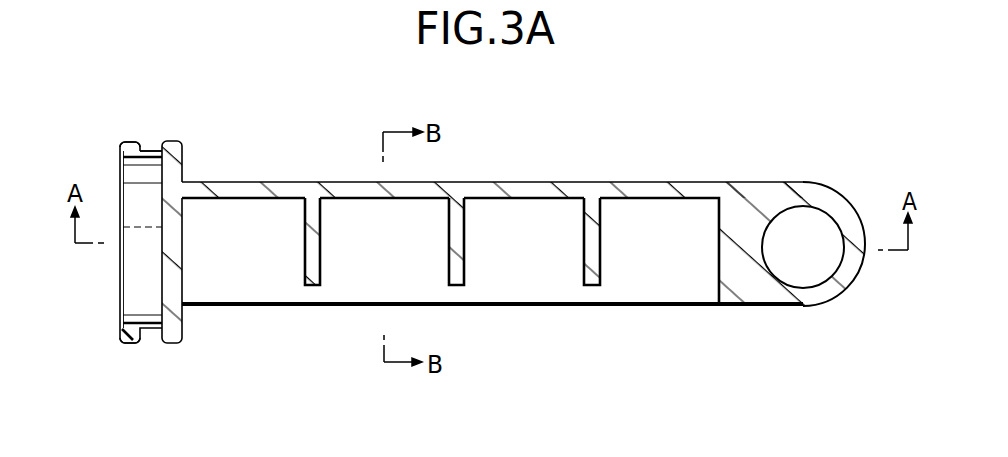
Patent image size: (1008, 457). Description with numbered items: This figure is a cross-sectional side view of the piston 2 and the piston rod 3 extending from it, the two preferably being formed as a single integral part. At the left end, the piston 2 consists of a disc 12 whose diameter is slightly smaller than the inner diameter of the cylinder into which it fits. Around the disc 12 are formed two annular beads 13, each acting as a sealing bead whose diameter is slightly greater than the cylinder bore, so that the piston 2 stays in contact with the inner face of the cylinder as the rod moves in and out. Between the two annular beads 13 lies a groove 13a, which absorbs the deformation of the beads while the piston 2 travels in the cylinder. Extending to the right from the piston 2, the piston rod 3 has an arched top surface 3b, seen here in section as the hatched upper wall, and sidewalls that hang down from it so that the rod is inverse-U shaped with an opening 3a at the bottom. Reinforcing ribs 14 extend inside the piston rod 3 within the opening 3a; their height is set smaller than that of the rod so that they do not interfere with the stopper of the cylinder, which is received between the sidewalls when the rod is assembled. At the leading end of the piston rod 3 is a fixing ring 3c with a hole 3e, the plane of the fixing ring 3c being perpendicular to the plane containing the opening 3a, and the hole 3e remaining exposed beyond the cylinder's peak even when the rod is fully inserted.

The piston 2 is at (186, 321).
The piston rod 3 is at (605, 182).
The opening 3a is at (535, 286).
The arched top surface 3b is at (533, 182).
The fixing ring 3c is at (838, 200).
The hole 3e is at (806, 273).
The disc 12 is at (127, 304).
The annular bead 13 is at (170, 141).
The groove 13a is at (147, 151).
The reinforcing rib 14 is at (309, 287).